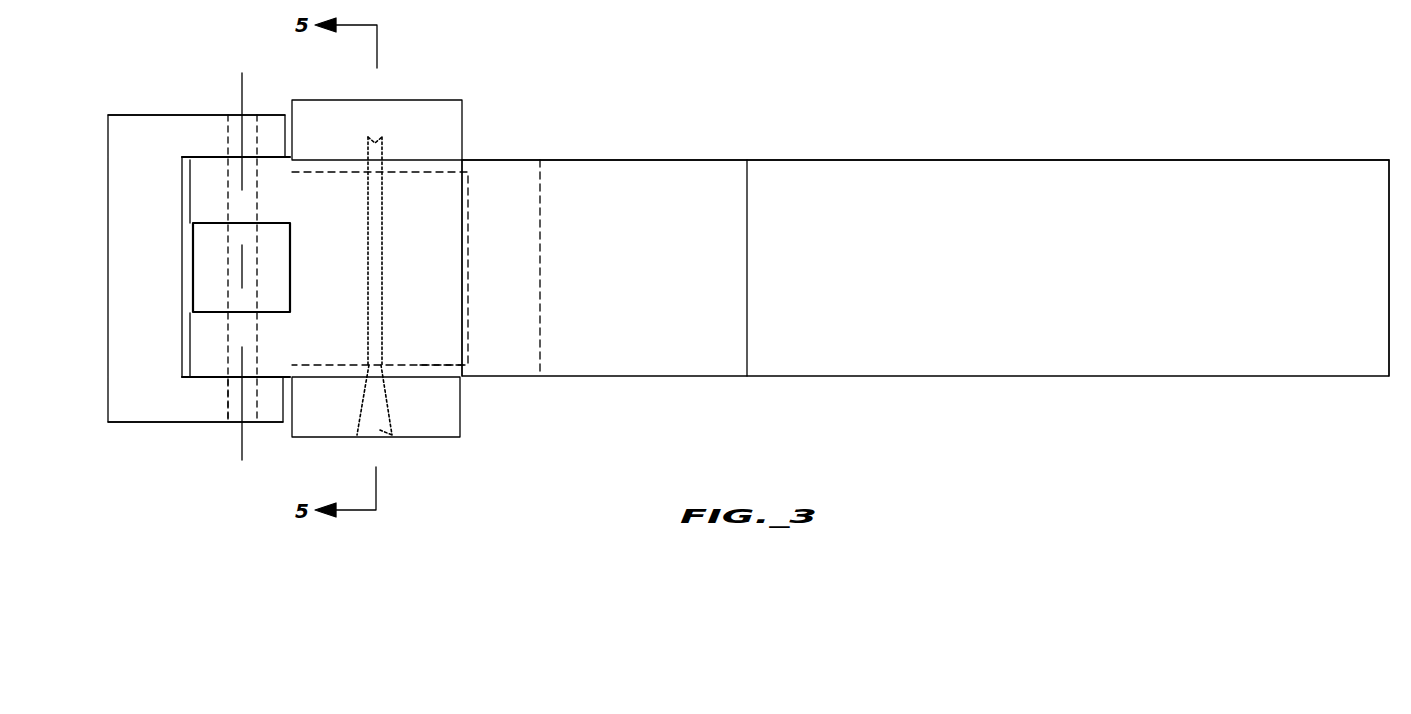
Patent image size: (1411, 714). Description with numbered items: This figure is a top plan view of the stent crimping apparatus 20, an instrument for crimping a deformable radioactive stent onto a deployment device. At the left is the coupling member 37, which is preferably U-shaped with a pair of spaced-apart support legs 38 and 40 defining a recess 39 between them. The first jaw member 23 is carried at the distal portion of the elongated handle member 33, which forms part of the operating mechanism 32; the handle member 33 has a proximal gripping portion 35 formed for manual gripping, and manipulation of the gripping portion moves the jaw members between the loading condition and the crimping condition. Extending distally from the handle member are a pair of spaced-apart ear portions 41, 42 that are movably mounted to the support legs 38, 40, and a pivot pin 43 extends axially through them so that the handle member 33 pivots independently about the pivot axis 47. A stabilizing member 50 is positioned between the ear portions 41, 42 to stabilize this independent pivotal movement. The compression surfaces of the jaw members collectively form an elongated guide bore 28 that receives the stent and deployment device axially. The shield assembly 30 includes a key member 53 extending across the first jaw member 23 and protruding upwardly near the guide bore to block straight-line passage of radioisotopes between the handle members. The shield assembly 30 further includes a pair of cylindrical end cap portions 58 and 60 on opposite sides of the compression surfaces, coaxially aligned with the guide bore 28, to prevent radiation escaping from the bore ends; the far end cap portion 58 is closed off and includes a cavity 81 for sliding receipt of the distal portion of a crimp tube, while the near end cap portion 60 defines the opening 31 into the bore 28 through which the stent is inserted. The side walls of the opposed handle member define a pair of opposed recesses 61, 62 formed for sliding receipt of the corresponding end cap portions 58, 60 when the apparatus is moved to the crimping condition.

The stent crimping apparatus 20 is at (739, 72).
The first jaw member 23 is at (497, 160).
The guide bore 28 is at (380, 226).
The shield assembly 30 is at (422, 254).
The opening 31 is at (381, 438).
The operating mechanism 32 is at (1195, 123).
The handle member 33 is at (1280, 159).
The proximal gripping portion 35 is at (1290, 343).
The coupling member 37 is at (120, 115).
The support leg 38 is at (173, 423).
The recess 39 is at (185, 176).
The support leg 40 is at (268, 114).
The ear portion 41 is at (190, 348).
The ear portion 42 is at (190, 188).
The pivot pin 43 is at (226, 407).
The pivot axis 47 is at (242, 438).
The stabilizing member 50 is at (192, 265).
The key member 53 is at (540, 207).
The far end cap portion 58 is at (427, 100).
The near end cap portion 60 is at (462, 407).
The recess 61 is at (426, 170).
The recess 62 is at (434, 364).
The cavity 81 is at (375, 135).